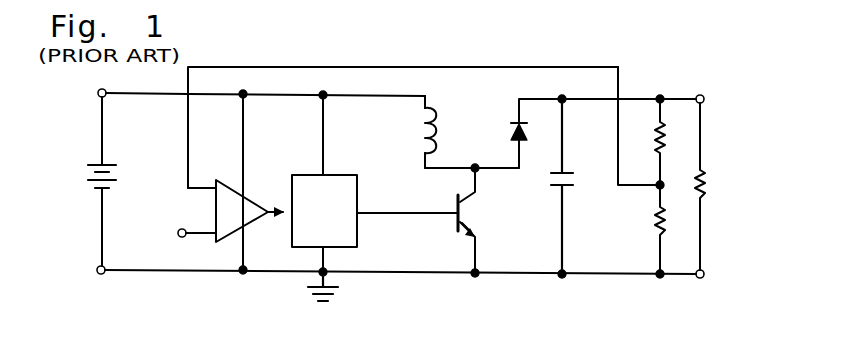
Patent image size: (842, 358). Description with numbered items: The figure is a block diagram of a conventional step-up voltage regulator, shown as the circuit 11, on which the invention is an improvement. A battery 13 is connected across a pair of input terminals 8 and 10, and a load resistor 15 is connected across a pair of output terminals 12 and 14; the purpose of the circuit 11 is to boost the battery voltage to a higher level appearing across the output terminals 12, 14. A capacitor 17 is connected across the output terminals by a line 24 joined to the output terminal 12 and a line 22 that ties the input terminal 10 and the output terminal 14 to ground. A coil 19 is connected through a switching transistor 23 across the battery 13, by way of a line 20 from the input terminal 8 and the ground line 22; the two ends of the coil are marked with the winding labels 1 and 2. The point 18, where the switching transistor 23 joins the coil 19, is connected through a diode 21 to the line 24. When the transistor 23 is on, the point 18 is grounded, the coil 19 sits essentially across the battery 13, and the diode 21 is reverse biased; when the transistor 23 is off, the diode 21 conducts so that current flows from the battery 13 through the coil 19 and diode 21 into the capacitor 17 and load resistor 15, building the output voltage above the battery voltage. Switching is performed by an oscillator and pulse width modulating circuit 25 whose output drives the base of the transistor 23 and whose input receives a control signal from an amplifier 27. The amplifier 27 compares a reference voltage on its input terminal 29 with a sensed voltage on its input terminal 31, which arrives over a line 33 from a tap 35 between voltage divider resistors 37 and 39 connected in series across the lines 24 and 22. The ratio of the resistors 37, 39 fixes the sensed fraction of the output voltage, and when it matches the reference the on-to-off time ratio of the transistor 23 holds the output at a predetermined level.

The inductor winding terminal 1 is at (407, 126).
The inductor winding terminal 2 is at (433, 93).
The input terminal 8 is at (98, 94).
The input terminal 10 is at (102, 275).
The circuit 11 is at (432, 49).
The output terminal 12 is at (704, 101).
The battery 13 is at (102, 181).
The output terminal 14 is at (704, 277).
The load resistor 15 is at (706, 178).
The capacitor 17 is at (556, 187).
The point 18 is at (478, 170).
The coil 19 is at (454, 124).
The line 20 is at (193, 93).
The diode 21 is at (511, 123).
The line 22 is at (278, 275).
The switching transistor 23 is at (463, 229).
The line 24 is at (632, 98).
The oscillator and pulse width modulating circuit 25 is at (357, 175).
The amplifier 27 is at (268, 208).
The amplifier input terminal 29 is at (209, 237).
The amplifier input terminal 31 is at (213, 187).
The line 33 is at (505, 67).
The tap 35 is at (657, 190).
The voltage divider resistor 37 is at (656, 146).
The voltage divider resistor 39 is at (657, 232).